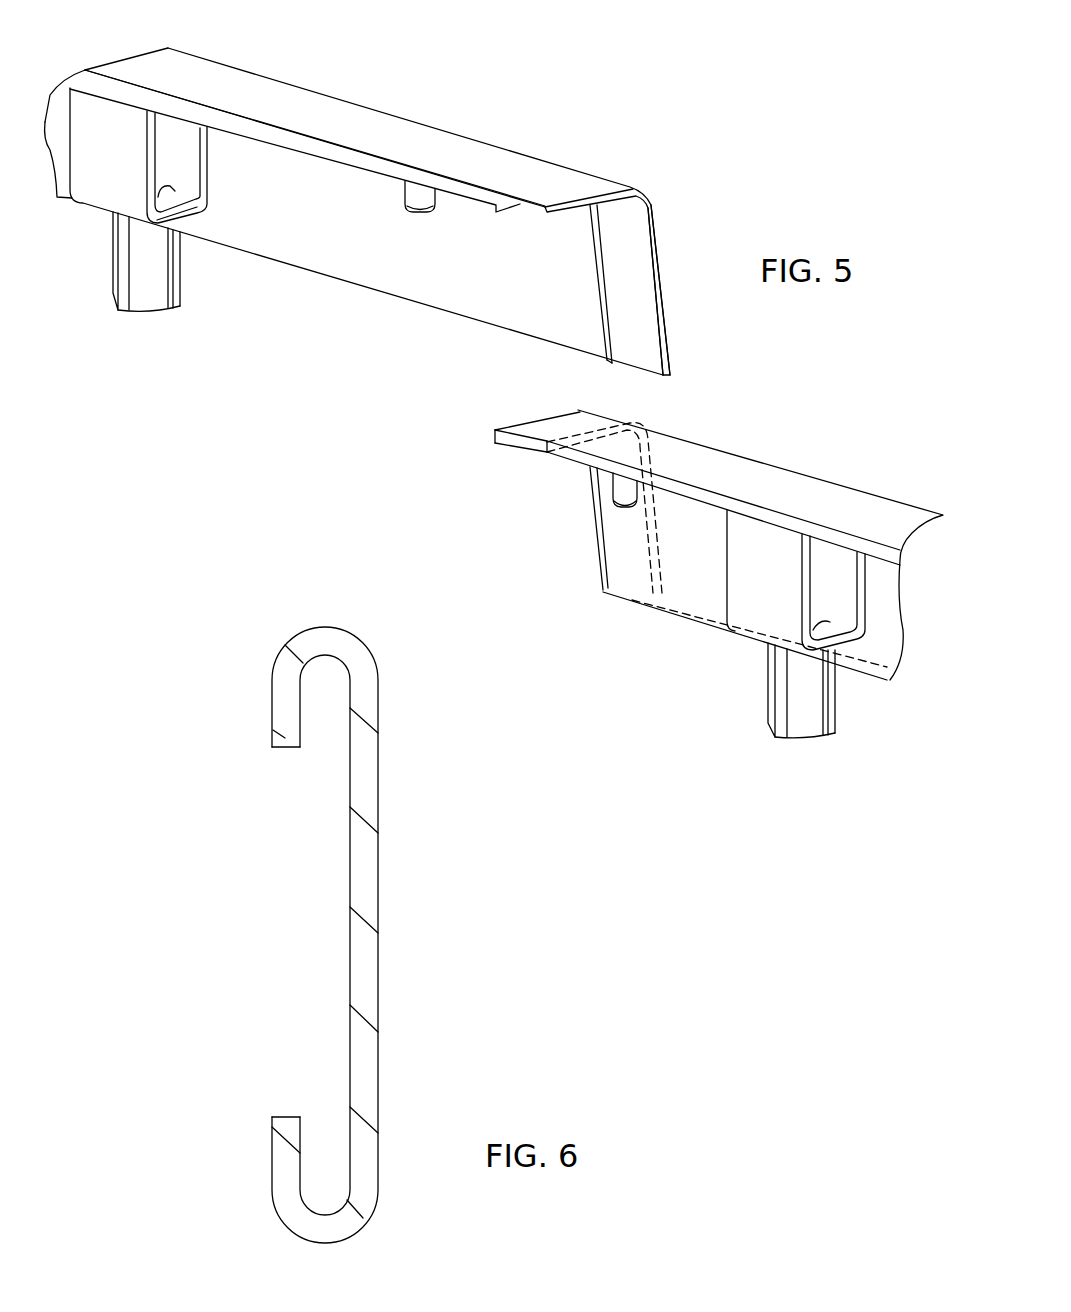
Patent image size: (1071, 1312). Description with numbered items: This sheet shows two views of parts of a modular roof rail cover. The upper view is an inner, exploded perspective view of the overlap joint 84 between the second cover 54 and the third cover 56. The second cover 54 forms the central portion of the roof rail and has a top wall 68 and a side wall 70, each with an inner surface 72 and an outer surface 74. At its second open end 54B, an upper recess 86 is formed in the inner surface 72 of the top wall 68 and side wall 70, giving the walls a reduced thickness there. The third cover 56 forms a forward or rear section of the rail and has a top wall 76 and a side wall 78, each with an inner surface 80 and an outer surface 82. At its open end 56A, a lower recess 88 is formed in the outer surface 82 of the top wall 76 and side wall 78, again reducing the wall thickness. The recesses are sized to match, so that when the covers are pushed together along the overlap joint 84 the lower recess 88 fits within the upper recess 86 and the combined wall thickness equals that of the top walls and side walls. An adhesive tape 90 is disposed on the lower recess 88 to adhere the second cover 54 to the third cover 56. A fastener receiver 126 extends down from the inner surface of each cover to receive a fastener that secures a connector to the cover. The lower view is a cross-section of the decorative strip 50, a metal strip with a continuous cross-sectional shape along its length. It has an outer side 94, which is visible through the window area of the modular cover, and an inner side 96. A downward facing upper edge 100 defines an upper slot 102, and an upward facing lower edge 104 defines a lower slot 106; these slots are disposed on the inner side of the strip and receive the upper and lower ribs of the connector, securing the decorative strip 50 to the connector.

In FIG. 6, the decorative strip 50 is at (326, 935).
In FIG. 5, the second cover 54 is at (383, 194).
In FIG. 5, the second open end 54B is at (567, 190).
In FIG. 5, the third cover 56 is at (655, 525).
In FIG. 5, the open end 56A is at (698, 458).
In FIG. 5, the top wall 68 is at (410, 173).
In FIG. 5, the side wall 70 is at (604, 262).
In FIG. 5, the inner surface 72 is at (437, 275).
In FIG. 5, the outer surface 74 is at (325, 117).
In FIG. 5, the top wall 76 is at (863, 545).
In FIG. 5, the side wall 78 is at (700, 615).
In FIG. 5, the inner surface 80 is at (722, 573).
In FIG. 5, the outer surface 82 is at (800, 497).
In FIG. 5, the overlap joint 84 is at (453, 398).
In FIG. 5, the upper recess 86 is at (625, 313).
In FIG. 5, the lower recess 88 is at (530, 433).
In FIG. 5, the adhesive tape 90 is at (513, 447).
In FIG. 6, the outer side 94 is at (378, 945).
In FIG. 6, the inner side 96 is at (351, 950).
In FIG. 6, the upper edge 100 is at (285, 735).
In FIG. 6, the upper slot 102 is at (311, 678).
In FIG. 6, the lower edge 104 is at (288, 1127).
In FIG. 6, the lower slot 106 is at (318, 1208).
In FIG. 5, the fastener receiver 126 is at (147, 294).